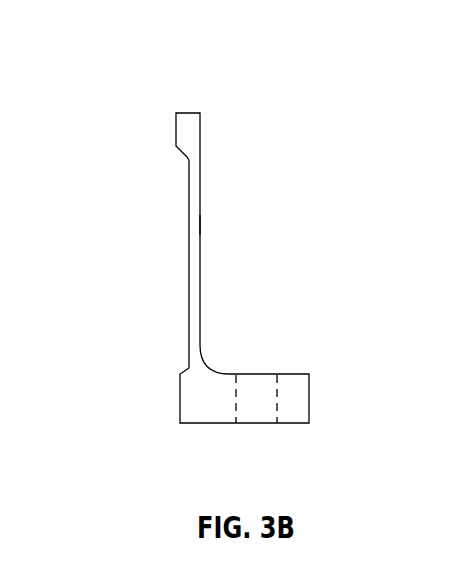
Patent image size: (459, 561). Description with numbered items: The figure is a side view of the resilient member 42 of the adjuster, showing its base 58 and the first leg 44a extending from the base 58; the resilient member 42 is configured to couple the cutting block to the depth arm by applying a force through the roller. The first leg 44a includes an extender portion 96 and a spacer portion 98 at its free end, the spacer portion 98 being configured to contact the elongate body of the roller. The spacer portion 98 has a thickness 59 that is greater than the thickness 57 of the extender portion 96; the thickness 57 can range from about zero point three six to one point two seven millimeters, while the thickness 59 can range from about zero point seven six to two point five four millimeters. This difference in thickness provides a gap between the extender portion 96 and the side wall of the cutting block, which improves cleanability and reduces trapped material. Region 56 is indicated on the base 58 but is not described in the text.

The resilient member 42 is at (103, 73).
The first leg 44a is at (193, 288).
The base portion 56 is at (257, 397).
The thickness of the extender portion 57 is at (206, 183).
The base 58 is at (300, 403).
The thickness of the spacer portion 59 is at (206, 133).
The extender portion 96 is at (193, 225).
The spacer portion 98 is at (195, 114).